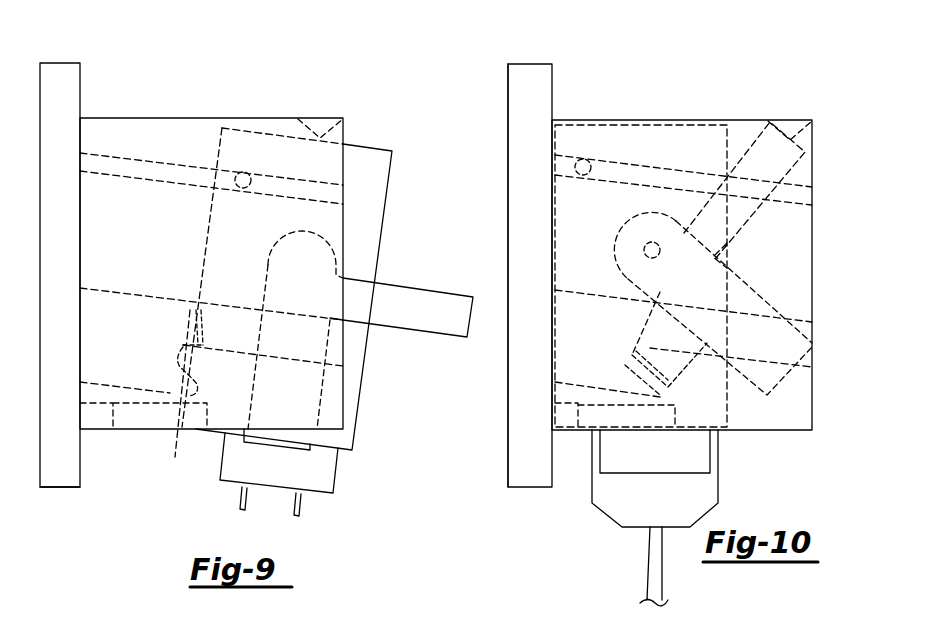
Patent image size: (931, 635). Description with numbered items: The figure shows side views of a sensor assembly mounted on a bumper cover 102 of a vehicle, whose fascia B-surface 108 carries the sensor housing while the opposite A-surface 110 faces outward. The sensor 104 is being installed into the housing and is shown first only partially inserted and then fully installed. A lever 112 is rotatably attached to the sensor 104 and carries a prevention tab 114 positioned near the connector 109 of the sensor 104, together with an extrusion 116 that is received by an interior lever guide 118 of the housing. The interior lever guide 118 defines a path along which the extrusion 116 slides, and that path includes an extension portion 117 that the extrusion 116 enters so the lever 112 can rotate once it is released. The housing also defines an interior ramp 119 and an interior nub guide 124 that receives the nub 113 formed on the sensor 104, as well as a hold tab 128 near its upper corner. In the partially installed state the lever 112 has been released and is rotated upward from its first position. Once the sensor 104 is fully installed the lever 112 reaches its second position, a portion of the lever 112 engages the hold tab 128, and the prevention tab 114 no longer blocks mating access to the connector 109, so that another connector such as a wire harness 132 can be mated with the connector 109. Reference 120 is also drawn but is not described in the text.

In FIG. 9, the bumper cover 102 is at (70, 72).
In FIG. 10, the bumper cover 102 is at (540, 72).
In FIG. 9, the sensor 104 is at (360, 152).
In FIG. 10, the sensor 104 is at (702, 138).
In FIG. 9, the fascia B-surface 108 is at (82, 83).
In FIG. 10, the fascia B-surface 108 is at (552, 83).
In FIG. 9, the connector 109 is at (323, 483).
In FIG. 10, the connector 109 is at (713, 414).
In FIG. 9, the A-surface 110 is at (40, 493).
In FIG. 10, the A-surface 110 is at (508, 97).
In FIG. 9, the lever 112 is at (430, 302).
In FIG. 10, the lever 112 is at (753, 150).
In FIG. 9, the nub 113 is at (250, 175).
In FIG. 10, the nub 113 is at (590, 160).
In FIG. 9, the prevention tab 114 is at (303, 410).
In FIG. 10, the prevention tab 114 is at (745, 300).
In FIG. 9, the extrusion 116 is at (197, 335).
In FIG. 10, the extrusion 116 is at (621, 375).
In FIG. 9, the extension portion 117 is at (185, 386).
In FIG. 9, the interior lever guide 118 is at (132, 322).
In FIG. 10, the interior lever guide 118 is at (598, 313).
In FIG. 9, the interior ramp 119 is at (178, 398).
In FIG. 9, the stop block 120 is at (92, 420).
In FIG. 9, the interior nub guide 124 is at (168, 155).
In FIG. 9, the hold tab 128 is at (320, 130).
In FIG. 10, the hold tab 128 is at (790, 126).
In FIG. 10, the wire harness 132 is at (618, 502).